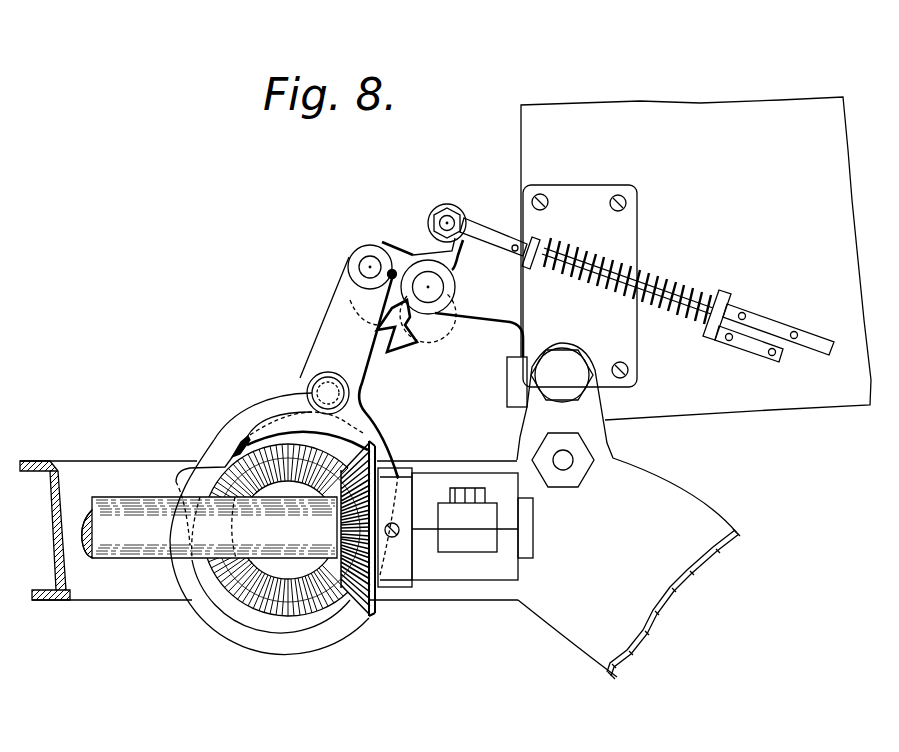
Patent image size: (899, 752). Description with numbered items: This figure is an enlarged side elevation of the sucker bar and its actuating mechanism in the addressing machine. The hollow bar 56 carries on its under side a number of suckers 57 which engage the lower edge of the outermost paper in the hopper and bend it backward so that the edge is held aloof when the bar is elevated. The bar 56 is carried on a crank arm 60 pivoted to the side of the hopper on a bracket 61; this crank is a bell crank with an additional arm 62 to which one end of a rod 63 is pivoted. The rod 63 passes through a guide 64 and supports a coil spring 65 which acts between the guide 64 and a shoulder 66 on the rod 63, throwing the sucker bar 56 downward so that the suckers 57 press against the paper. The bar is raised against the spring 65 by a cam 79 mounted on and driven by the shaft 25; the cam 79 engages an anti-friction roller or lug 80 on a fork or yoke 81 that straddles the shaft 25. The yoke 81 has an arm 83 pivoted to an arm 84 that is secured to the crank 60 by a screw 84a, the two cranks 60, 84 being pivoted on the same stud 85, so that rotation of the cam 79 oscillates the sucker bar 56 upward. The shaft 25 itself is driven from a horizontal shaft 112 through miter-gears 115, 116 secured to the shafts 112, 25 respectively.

The shaft 25 is at (273, 567).
The hollow bar 56 is at (360, 243).
The suckers 57 is at (398, 345).
The crank arm 60 is at (400, 255).
The brackets 61 is at (487, 316).
The additional arm 62 is at (450, 204).
The rod 63 is at (492, 232).
The guide 64 is at (727, 302).
The coil spring 65 is at (657, 277).
The shoulder 66 is at (562, 206).
The cam 79 is at (350, 437).
The anti-friction roller or lug 80 is at (312, 392).
The fork or yoke 81 is at (230, 425).
The arm 83 is at (337, 316).
The arm 84 is at (412, 253).
The screw 84a is at (390, 287).
The stud 85 is at (433, 287).
The horizontal shaft 112 is at (132, 482).
The miter-gear 115 is at (368, 616).
The miter-gear 116 is at (327, 575).